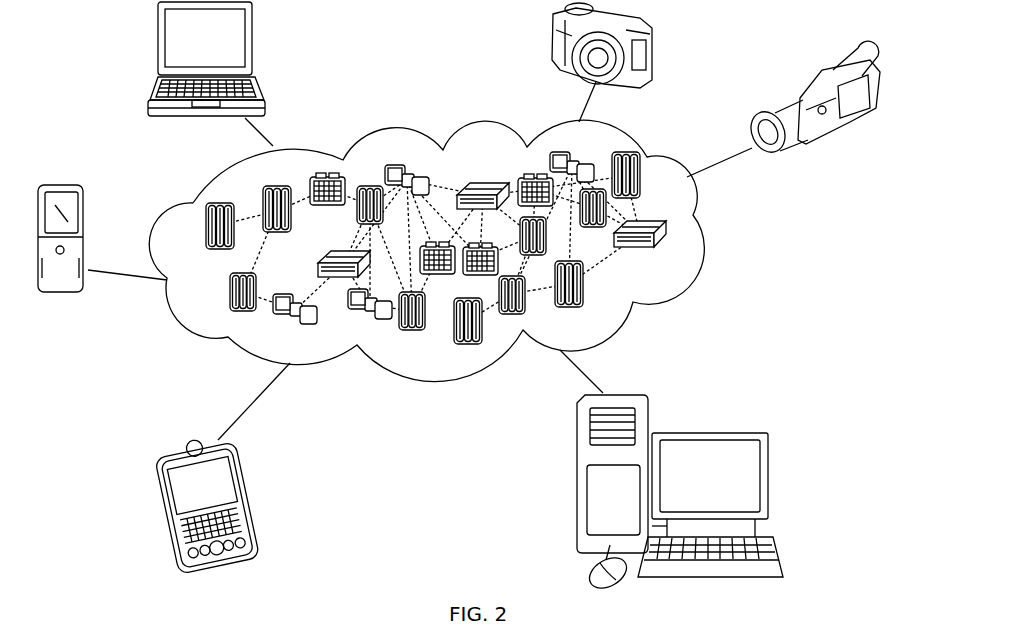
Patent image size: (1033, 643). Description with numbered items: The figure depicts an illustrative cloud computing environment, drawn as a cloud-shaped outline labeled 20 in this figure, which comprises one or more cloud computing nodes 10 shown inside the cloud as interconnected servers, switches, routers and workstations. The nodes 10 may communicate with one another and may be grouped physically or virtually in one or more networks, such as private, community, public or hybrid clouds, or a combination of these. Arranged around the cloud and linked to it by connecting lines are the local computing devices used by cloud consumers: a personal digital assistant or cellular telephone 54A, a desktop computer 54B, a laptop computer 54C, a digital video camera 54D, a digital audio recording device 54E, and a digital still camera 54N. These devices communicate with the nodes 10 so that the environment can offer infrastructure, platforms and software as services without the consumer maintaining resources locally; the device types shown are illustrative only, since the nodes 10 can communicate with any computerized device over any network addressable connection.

The cloud computing nodes 10 is at (471, 248).
The network 20 is at (712, 233).
The personal digital assistant or cellular telephone 54A is at (247, 497).
The desktop computer 54B is at (707, 430).
The laptop computer 54C is at (253, 45).
The digital video camera 54D is at (828, 145).
The digital audio recording device 54E is at (55, 292).
The digital still camera 54N is at (557, 46).